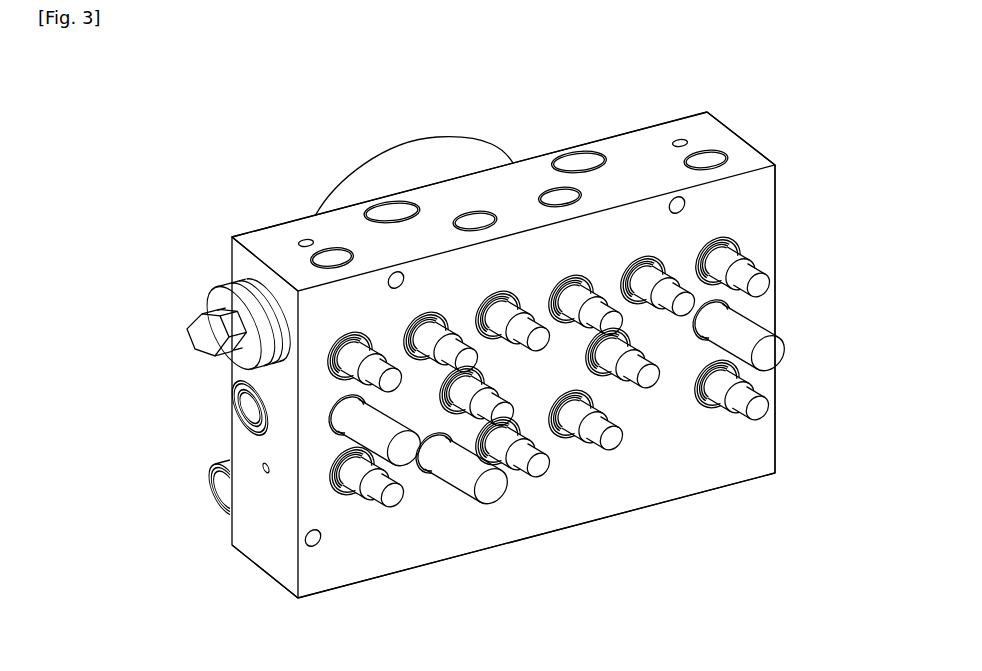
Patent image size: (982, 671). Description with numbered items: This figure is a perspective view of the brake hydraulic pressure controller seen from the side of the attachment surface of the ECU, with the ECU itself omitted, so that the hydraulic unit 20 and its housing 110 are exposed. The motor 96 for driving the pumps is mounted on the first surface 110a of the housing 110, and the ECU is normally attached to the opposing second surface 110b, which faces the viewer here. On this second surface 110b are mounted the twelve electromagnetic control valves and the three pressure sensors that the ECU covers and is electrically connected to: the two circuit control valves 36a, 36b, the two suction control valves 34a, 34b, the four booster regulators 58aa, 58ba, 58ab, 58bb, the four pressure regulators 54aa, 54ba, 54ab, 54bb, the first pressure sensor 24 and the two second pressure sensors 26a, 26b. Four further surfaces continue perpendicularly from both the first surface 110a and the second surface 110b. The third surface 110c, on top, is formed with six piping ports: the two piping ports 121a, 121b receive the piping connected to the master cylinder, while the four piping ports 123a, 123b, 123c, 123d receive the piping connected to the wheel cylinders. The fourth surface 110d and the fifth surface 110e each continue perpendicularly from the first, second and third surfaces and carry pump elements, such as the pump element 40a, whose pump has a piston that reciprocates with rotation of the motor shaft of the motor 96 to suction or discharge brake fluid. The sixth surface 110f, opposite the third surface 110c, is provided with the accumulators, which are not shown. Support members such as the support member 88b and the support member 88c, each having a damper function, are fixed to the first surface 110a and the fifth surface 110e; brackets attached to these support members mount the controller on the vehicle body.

The hydraulic unit 20 is at (731, 105).
The first pressure sensor 24 is at (494, 484).
The second pressure sensor 26a is at (403, 451).
The second pressure sensor 26b is at (772, 350).
The suction control valve 34a is at (507, 413).
The suction control valve 34b is at (538, 342).
The circuit control valve 36a is at (441, 312).
The circuit control valve 36b is at (600, 305).
The pump element 40a is at (249, 409).
The pressure regulator 54aa is at (398, 503).
The pressure regulator 54ab is at (758, 404).
The pressure regulator 54ba is at (541, 466).
The pressure regulator 54bb is at (617, 445).
The booster regulator 58aa is at (360, 367).
The booster regulator 58ab is at (770, 287).
The booster regulator 58ba is at (660, 382).
The booster regulator 58bb is at (674, 282).
The support member 88b is at (214, 494).
The support member 88c is at (224, 288).
The motor 96 is at (487, 139).
The housing 110 is at (778, 182).
The first surface 110a is at (221, 245).
The second surface 110b is at (766, 203).
The third surface 110c is at (429, 203).
The fourth surface 110d is at (785, 288).
The fifth surface 110e is at (236, 538).
The sixth surface 110f is at (472, 558).
The piping port 121a is at (385, 210).
The piping port 121b is at (580, 162).
The piping port 123a is at (332, 256).
The piping port 123b is at (476, 219).
The piping port 123c is at (706, 157).
The piping port 123d is at (551, 192).